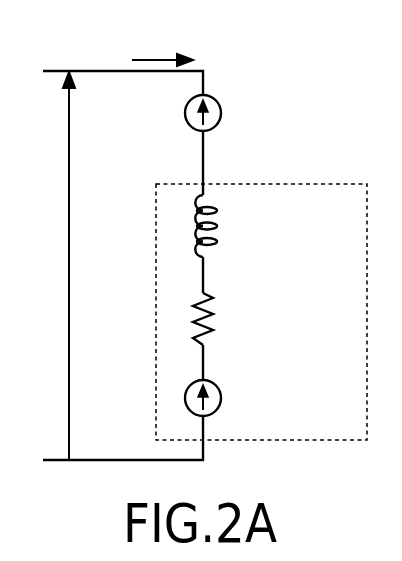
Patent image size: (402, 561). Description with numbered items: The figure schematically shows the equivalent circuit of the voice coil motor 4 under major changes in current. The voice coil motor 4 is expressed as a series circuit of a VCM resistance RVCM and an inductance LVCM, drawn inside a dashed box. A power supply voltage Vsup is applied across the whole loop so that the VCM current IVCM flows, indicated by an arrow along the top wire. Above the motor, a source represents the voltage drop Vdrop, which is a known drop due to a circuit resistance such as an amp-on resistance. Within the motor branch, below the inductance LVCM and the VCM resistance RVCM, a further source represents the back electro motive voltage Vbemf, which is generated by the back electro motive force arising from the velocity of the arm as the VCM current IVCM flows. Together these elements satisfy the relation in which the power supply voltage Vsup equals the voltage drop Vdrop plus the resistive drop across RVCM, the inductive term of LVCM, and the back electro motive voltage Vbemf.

The voice coil motor 4 is at (342, 184).
The voltage drop Vdrop is at (222, 112).
The inductance LVCM is at (217, 225).
The VCM resistance RVCM is at (217, 317).
The back electro motive voltage Vbemf is at (222, 397).
The power supply voltage Vsup is at (48, 266).
The VCM current IVCM is at (162, 44).